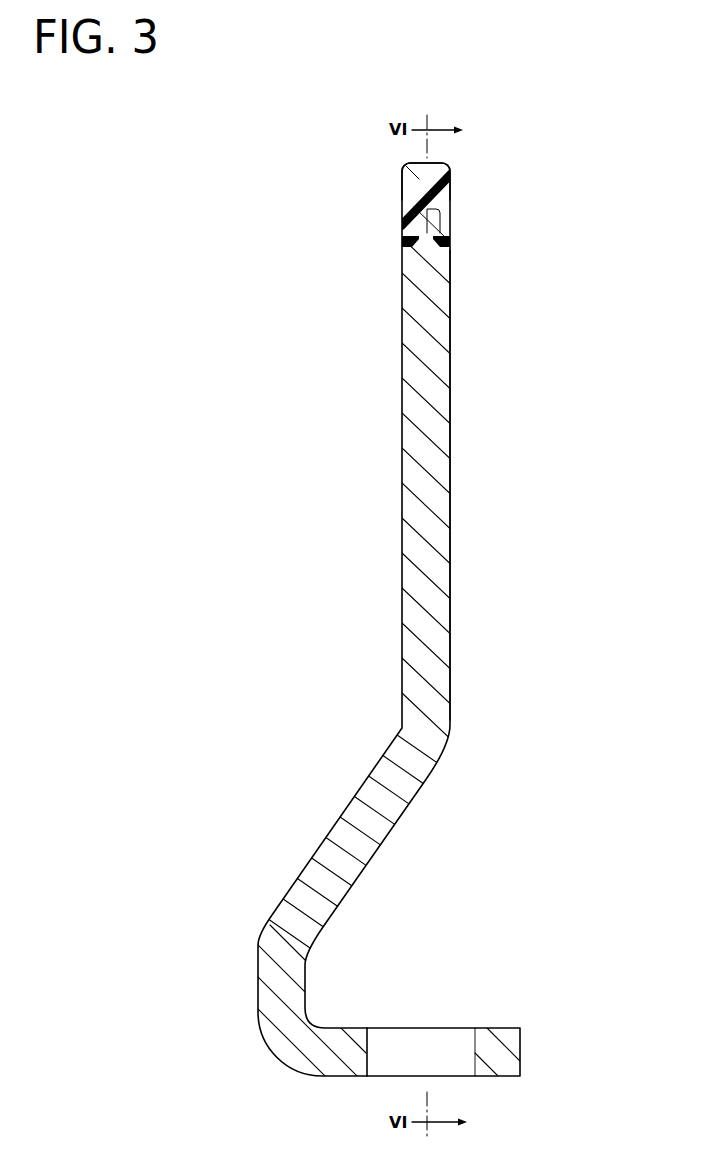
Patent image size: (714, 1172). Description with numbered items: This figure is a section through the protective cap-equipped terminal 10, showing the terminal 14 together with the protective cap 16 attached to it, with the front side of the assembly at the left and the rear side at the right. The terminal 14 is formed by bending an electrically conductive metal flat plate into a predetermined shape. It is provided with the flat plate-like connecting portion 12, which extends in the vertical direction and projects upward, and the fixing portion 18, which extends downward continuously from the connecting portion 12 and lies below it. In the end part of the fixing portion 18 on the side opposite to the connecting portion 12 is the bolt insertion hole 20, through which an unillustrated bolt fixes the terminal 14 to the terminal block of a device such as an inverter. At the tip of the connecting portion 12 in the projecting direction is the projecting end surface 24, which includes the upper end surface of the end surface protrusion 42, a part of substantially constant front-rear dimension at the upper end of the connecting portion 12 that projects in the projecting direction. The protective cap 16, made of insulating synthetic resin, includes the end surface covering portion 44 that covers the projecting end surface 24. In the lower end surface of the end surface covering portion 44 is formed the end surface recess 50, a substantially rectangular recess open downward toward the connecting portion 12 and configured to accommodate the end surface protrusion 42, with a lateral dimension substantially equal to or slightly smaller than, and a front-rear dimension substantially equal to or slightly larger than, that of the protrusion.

The protective cap-equipped terminal 10 is at (552, 160).
The connecting portion 12 is at (415, 543).
The terminal 14 is at (482, 430).
The protective cap 16 is at (472, 162).
The fixing portion 18 is at (350, 838).
The bolt insertion hole 20 is at (366, 1078).
The projecting end surface 24 is at (420, 206).
The end surface protrusion 42 is at (418, 223).
The end surface covering portion 44 is at (420, 184).
The end surface recess 50 is at (441, 219).